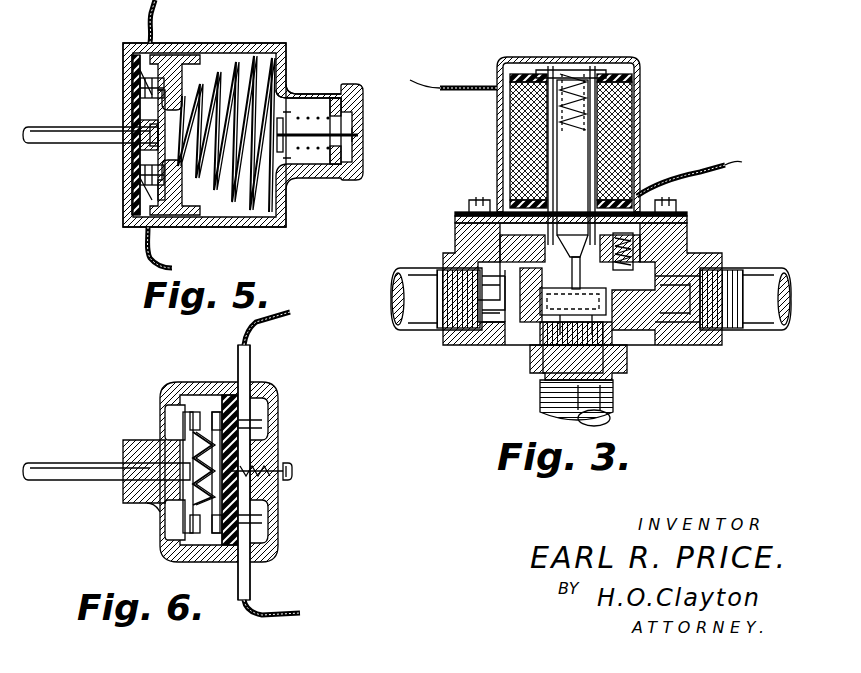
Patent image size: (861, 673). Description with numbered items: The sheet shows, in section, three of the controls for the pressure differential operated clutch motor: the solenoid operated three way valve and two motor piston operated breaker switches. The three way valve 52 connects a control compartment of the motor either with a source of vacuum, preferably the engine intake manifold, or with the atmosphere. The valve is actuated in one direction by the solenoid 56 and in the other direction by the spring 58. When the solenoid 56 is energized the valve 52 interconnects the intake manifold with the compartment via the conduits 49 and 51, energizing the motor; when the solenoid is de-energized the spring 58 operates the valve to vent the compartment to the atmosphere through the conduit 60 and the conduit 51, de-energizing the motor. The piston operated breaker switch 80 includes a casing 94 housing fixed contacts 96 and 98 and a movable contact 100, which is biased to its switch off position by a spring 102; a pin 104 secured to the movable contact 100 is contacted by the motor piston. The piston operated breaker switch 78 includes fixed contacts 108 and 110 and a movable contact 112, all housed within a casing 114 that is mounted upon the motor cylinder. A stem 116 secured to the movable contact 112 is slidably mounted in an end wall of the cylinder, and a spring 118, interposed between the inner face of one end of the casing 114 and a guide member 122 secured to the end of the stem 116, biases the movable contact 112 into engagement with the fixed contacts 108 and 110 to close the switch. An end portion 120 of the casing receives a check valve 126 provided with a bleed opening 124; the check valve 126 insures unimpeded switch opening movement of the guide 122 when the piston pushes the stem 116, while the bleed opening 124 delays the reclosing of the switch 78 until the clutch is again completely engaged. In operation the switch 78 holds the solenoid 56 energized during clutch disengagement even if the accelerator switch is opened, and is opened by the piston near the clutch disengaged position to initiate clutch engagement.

In FIG. 5, the piston operated breaker switch 78 is at (115, 108).
In FIG. 5, the fixed contact 108 is at (128, 78).
In FIG. 5, the fixed contact 110 is at (125, 193).
In FIG. 5, the movable contact 112 is at (165, 205).
In FIG. 5, the casing 114 is at (263, 223).
In FIG. 5, the stem 116 is at (110, 133).
In FIG. 5, the spring 118 is at (232, 75).
In FIG. 5, the housing extension 120 is at (300, 93).
In FIG. 5, the guide member 122 is at (175, 83).
In FIG. 5, the bleed opening 124 is at (366, 98).
In FIG. 5, the check valve 126 is at (366, 172).
In FIG. 3, the solenoid 56 is at (622, 127).
In FIG. 3, the spring 58 is at (583, 73).
In FIG. 3, the conduit 60 is at (392, 288).
In FIG. 3, the conduit 51 is at (790, 300).
In FIG. 3, the three way valve 52 is at (523, 348).
In FIG. 3, the conduit 49 is at (592, 428).
In FIG. 6, the piston operated breaker switch 80 is at (287, 502).
In FIG. 6, the casing 94 is at (128, 453).
In FIG. 6, the fixed contact 96 is at (217, 407).
In FIG. 6, the fixed contact 98 is at (180, 558).
In FIG. 6, the movable contact 100 is at (187, 433).
In FIG. 6, the spring 102 is at (217, 520).
In FIG. 6, the pin 104 is at (110, 472).